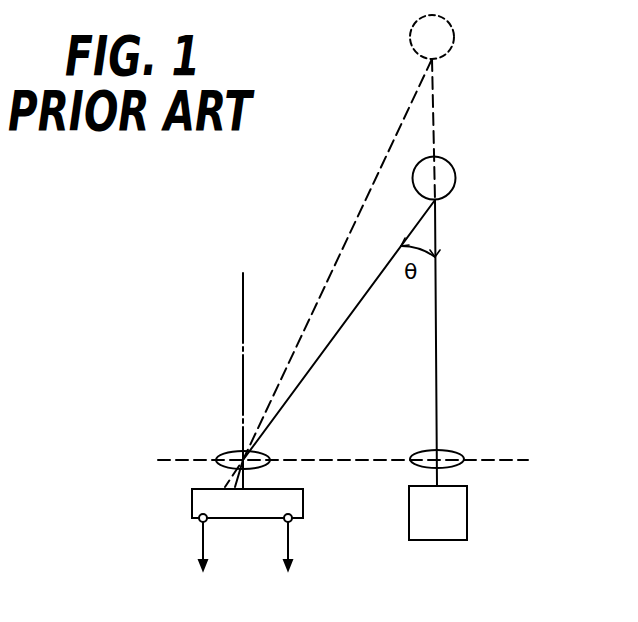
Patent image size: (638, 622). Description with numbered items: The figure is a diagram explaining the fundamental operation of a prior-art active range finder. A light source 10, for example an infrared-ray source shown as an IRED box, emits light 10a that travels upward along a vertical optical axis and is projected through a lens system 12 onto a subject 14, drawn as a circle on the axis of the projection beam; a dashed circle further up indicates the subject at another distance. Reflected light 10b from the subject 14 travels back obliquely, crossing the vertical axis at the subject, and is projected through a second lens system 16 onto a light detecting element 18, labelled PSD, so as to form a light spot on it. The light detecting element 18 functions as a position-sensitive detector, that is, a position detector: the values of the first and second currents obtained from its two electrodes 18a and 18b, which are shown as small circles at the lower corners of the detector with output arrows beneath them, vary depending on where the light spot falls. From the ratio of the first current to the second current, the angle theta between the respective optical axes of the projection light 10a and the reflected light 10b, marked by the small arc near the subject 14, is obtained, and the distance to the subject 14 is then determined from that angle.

The light source 10 is at (467, 497).
The emitted light 10a is at (437, 354).
The reflected light 10b is at (348, 318).
The lens system 12 is at (448, 452).
The subject 14 is at (455, 172).
The lens system 16 is at (262, 455).
The light detecting element 18 is at (303, 497).
The electrode 18a is at (200, 521).
The electrode 18b is at (292, 522).